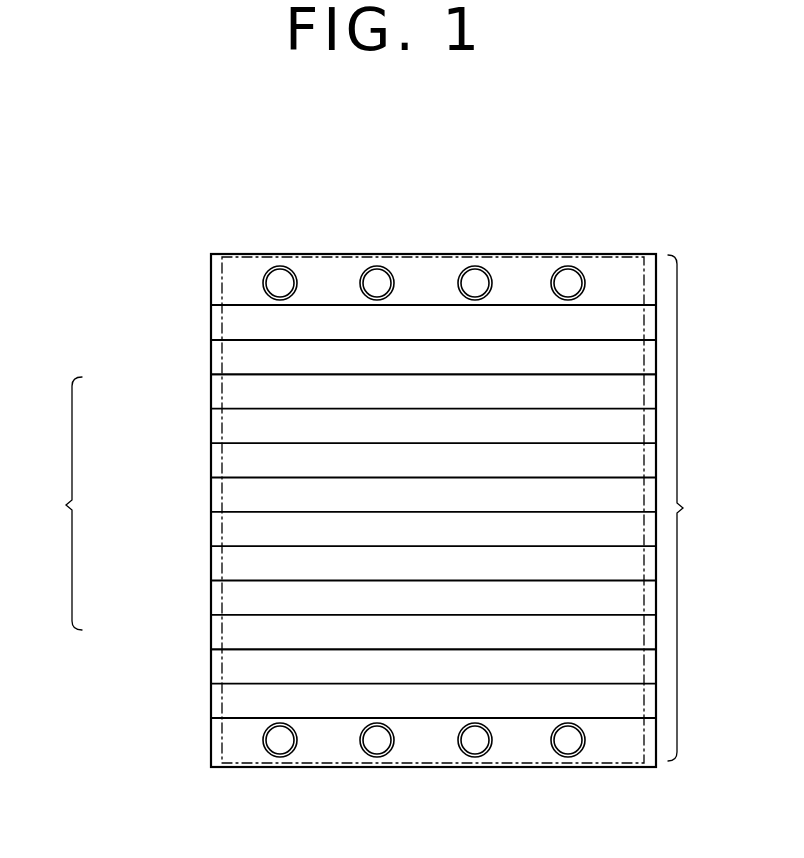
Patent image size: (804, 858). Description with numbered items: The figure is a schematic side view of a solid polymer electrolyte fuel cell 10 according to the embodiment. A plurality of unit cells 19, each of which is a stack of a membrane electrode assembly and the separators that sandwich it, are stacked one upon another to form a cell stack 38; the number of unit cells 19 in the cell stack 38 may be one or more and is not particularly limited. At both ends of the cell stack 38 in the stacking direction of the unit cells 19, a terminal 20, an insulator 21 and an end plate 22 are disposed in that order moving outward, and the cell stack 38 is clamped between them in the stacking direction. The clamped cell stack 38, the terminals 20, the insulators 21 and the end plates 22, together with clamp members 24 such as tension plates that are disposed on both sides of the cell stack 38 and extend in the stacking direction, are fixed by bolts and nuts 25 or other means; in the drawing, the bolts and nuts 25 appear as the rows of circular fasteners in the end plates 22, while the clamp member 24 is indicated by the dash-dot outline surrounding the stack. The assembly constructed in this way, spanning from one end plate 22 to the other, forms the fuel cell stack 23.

The solid polymer electrolyte fuel cell 10 is at (394, 187).
The unit cell 19 is at (211, 404).
The terminal 20 is at (211, 358).
The insulator 21 is at (211, 318).
The end plate 22 is at (211, 273).
The fuel cell stack 23 is at (695, 508).
The clamp member 24 is at (218, 756).
The bolts and nuts 25 is at (277, 286).
The cell stack 38 is at (344, 511).